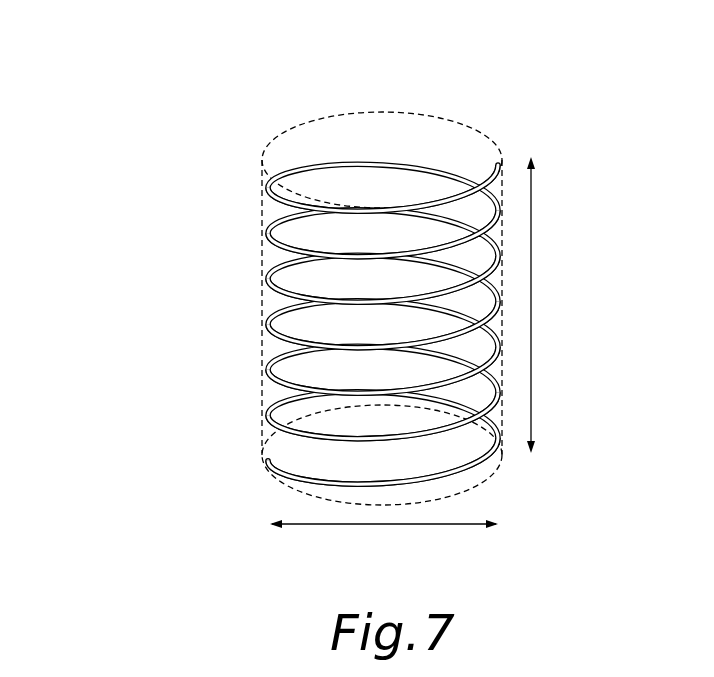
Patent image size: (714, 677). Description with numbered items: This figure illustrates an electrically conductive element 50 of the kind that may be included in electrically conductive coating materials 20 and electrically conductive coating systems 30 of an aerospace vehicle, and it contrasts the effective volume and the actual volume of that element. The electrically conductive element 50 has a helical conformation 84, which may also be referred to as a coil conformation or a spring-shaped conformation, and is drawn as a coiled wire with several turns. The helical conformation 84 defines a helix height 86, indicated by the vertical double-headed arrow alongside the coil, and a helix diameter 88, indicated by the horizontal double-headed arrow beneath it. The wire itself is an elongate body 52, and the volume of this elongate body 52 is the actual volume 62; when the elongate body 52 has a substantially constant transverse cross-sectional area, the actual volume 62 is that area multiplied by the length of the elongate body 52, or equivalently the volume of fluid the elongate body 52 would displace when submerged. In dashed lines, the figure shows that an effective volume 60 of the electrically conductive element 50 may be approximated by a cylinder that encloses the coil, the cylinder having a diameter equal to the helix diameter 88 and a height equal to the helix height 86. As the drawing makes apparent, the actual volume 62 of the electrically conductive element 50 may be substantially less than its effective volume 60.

The electrically conductive coating material 20 is at (134, 90).
The electrically conductive coating system 30 is at (131, 135).
The electrically conductive element 50 is at (136, 183).
The helical conformation 84 is at (272, 106).
The effective volume 60 is at (471, 126).
The elongate body 52 is at (297, 428).
The actual volume 62 is at (423, 437).
The helix height 86 is at (531, 298).
The helix diameter 88 is at (363, 524).